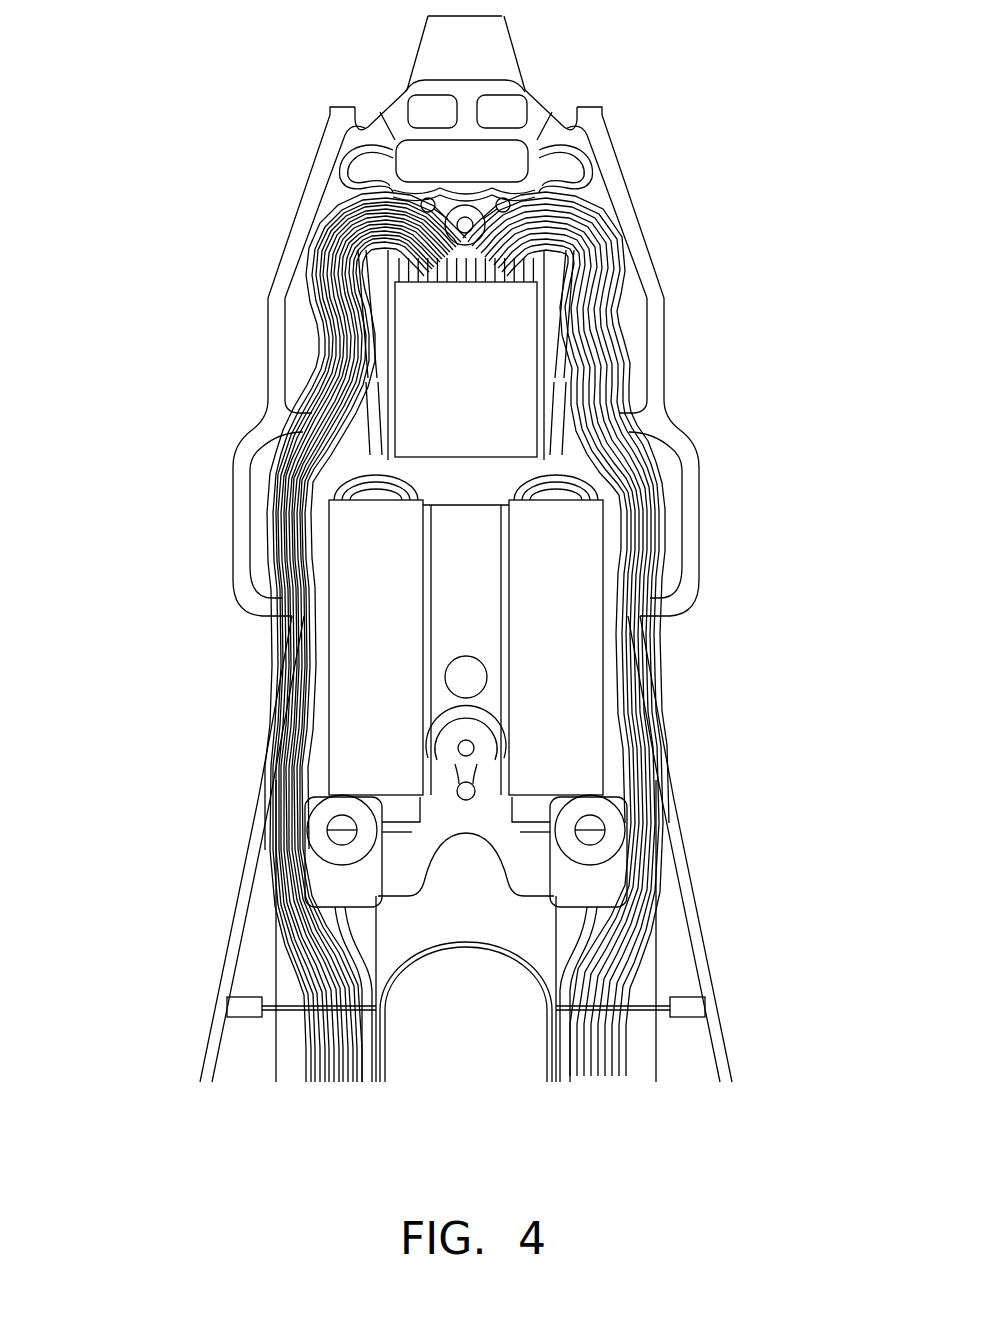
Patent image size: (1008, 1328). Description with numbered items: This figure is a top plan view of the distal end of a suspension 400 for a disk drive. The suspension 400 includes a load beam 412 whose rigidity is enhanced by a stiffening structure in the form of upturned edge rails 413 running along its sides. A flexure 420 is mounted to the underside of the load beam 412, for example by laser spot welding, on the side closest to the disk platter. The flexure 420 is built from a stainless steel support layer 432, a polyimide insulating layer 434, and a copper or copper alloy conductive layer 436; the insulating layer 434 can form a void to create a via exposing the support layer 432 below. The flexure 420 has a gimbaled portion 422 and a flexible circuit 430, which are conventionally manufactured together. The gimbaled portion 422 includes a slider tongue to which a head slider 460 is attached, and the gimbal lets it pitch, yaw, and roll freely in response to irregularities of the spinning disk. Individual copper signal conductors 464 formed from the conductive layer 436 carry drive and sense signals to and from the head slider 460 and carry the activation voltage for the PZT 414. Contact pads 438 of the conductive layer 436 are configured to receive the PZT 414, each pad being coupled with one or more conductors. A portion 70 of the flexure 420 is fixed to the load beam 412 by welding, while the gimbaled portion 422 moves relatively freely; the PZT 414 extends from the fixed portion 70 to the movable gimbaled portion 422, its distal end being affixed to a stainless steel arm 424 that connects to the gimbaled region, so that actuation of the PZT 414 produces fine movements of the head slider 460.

The suspension 400 is at (750, 136).
The flexure 420 is at (747, 367).
The gimbaled portion 422 is at (123, 12).
The head slider 460 is at (425, 318).
The stainless steel arm 424 is at (372, 408).
The flexible circuit 430 is at (282, 460).
The PZT 414 is at (355, 676).
The upturned edge rails 413 is at (228, 963).
The portion of the flexure 70 is at (820, 620).
The contact pads 438 is at (608, 885).
The copper signal conductors 464 is at (623, 921).
The conductive layer 436 is at (598, 944).
The support layer 432 is at (445, 908).
The load beam 412 is at (245, 1070).
The insulating layer 434 is at (632, 1063).